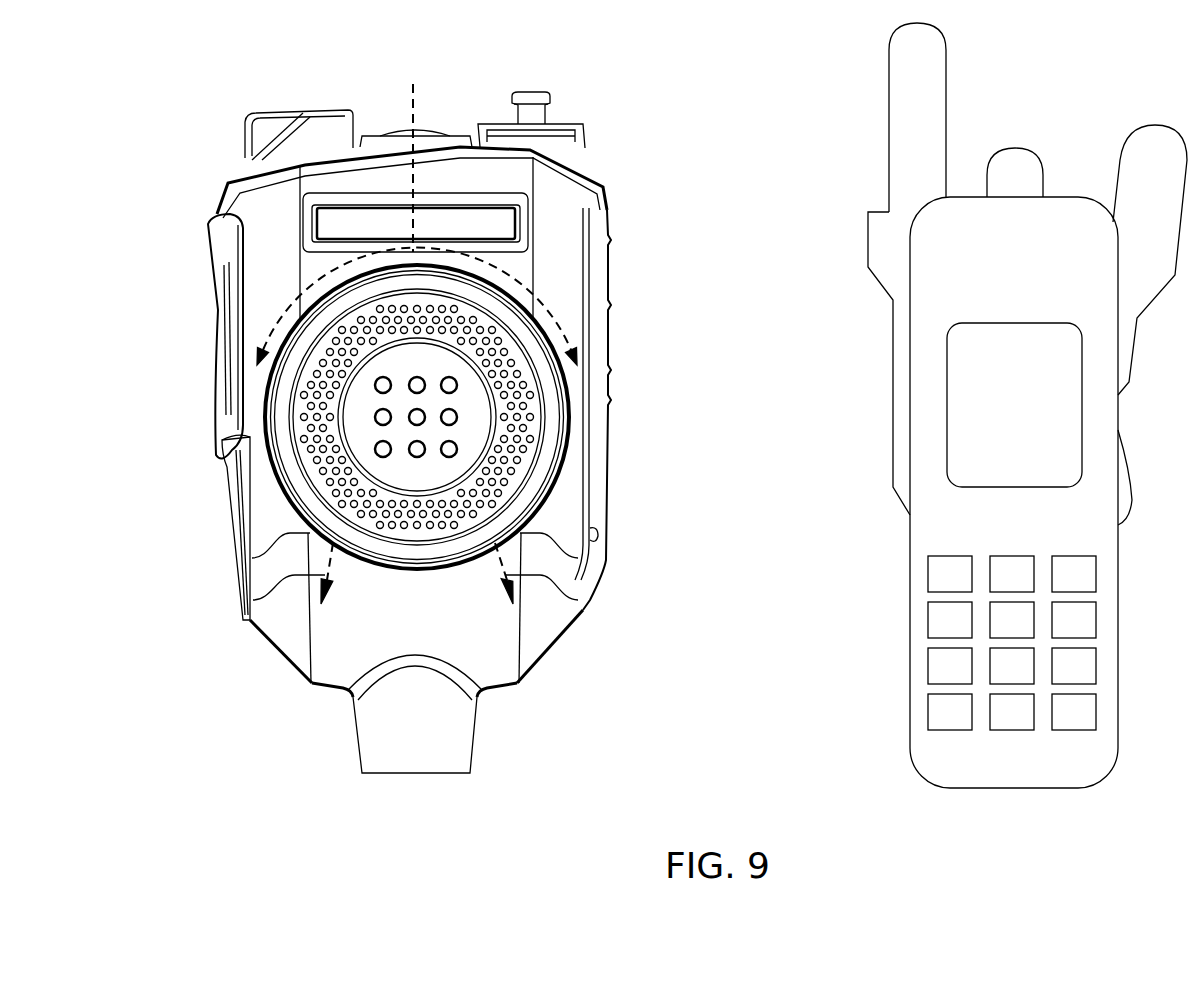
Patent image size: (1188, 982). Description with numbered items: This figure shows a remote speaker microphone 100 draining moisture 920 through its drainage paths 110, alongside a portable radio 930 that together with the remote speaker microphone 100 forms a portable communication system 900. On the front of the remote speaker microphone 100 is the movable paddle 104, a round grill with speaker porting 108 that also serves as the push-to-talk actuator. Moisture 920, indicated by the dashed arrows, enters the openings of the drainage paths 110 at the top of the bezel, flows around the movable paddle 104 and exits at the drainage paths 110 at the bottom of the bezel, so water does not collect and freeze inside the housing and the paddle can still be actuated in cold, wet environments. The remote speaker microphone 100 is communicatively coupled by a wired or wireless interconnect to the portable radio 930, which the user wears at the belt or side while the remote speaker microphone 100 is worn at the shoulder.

The remote speaker microphone 100 is at (600, 205).
The movable paddle 104 is at (468, 435).
The speaker porting 108 is at (376, 518).
The drainage paths 110 is at (326, 276).
The portable communication system 900 is at (667, 760).
The moisture 920 is at (295, 308).
The portable radio 930 is at (1118, 655).